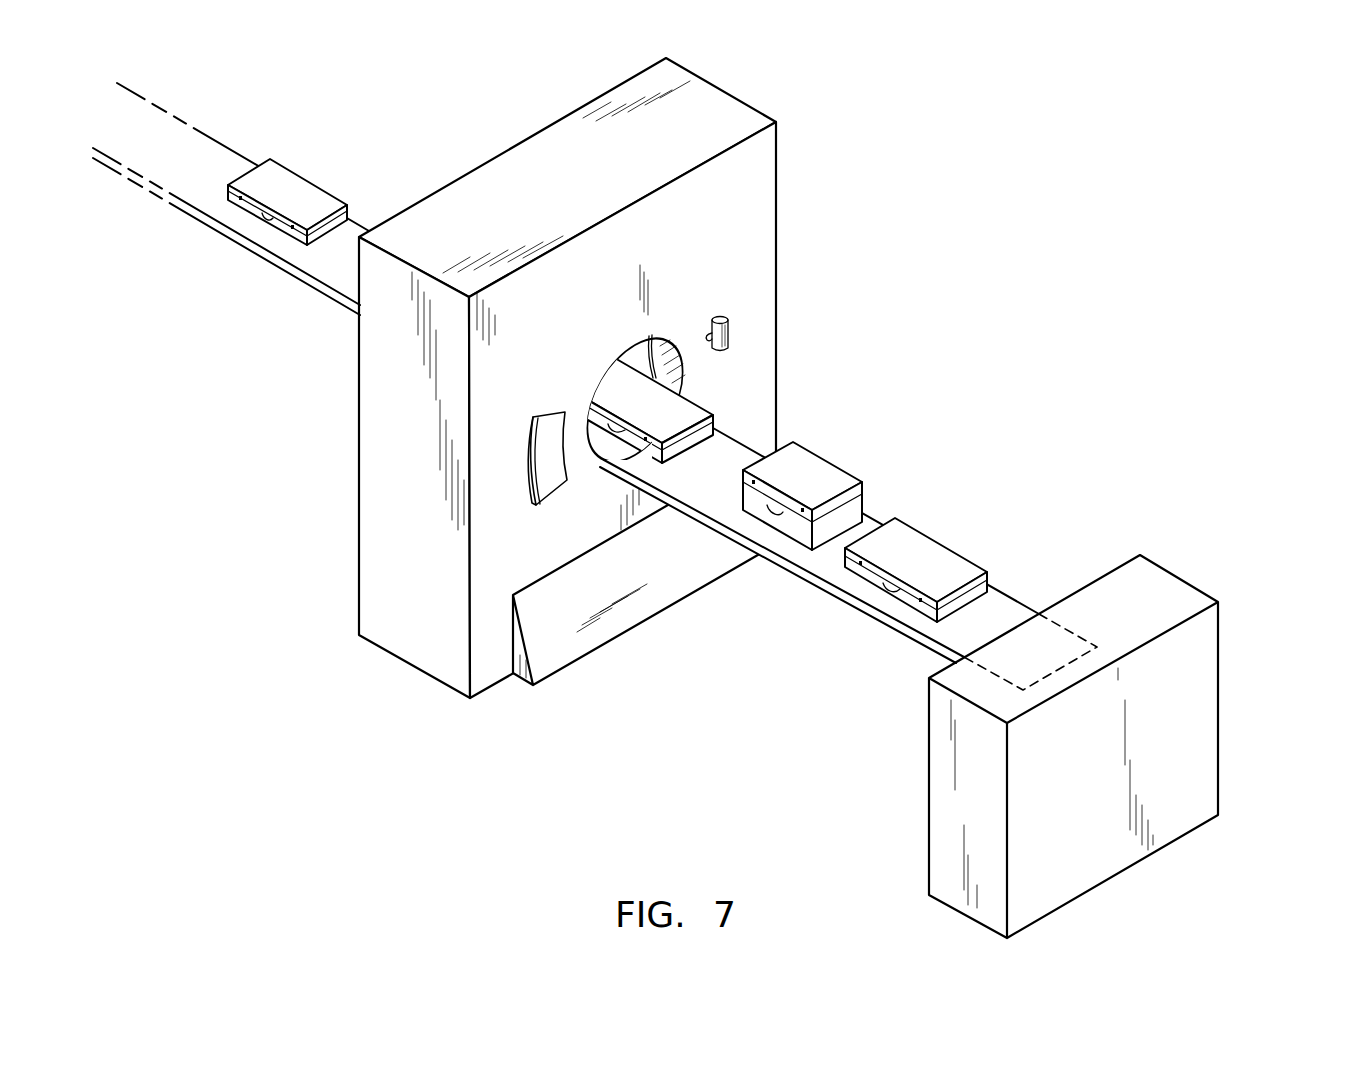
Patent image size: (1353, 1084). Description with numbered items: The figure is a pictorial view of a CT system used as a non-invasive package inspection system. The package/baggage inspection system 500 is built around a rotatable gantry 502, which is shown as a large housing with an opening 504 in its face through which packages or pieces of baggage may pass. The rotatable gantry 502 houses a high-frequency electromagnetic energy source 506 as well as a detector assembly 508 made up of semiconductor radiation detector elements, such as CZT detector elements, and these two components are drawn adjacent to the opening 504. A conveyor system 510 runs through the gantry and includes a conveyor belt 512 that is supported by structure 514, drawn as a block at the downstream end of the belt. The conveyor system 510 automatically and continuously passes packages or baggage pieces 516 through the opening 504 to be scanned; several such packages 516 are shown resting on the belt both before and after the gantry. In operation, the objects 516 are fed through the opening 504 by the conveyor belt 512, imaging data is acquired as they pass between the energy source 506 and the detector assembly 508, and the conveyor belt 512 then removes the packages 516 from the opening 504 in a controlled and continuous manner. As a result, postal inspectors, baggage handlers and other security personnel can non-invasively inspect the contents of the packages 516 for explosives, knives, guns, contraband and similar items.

The package/baggage inspection system 500 is at (938, 398).
The rotatable gantry 502 is at (714, 274).
The opening 504 is at (665, 338).
The high-frequency electromagnetic energy source 506 is at (728, 338).
The detector assembly 508 is at (555, 423).
The conveyor system 510 is at (113, 193).
The conveyor belt 512 is at (328, 267).
The structure 514 is at (1203, 699).
The packages or baggage pieces 516 is at (297, 187).